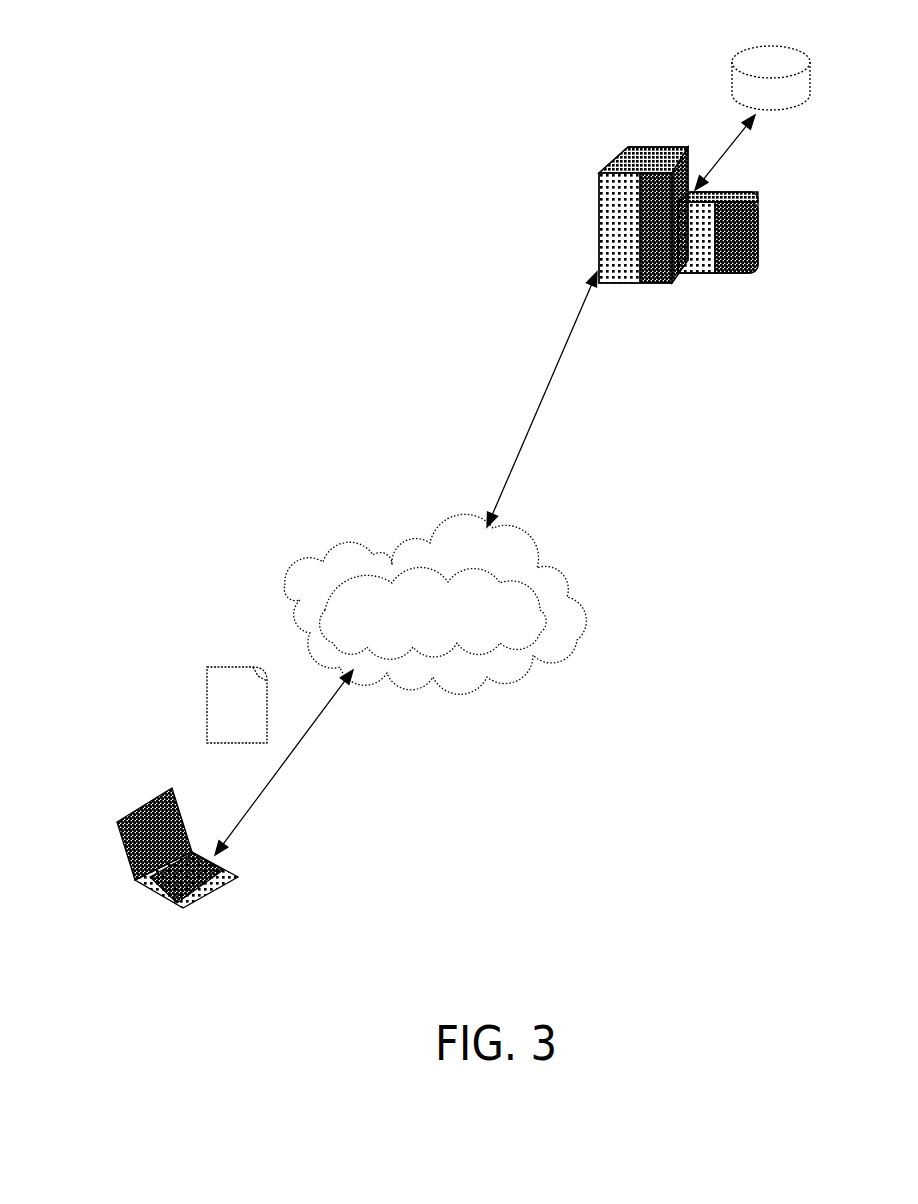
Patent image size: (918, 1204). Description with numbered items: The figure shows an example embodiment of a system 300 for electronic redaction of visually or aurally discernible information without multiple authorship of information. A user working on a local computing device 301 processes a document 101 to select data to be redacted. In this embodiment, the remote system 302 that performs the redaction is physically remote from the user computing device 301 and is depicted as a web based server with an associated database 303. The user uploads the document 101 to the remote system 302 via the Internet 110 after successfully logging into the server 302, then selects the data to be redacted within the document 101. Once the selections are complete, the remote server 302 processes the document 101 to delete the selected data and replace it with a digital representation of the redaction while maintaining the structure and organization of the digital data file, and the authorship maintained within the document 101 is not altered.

The system 300 is at (322, 38).
The database 303 is at (727, 59).
The remote system 302 is at (624, 230).
The Internet 110 is at (403, 603).
The document 101 is at (192, 684).
The local computing device 301 is at (136, 834).